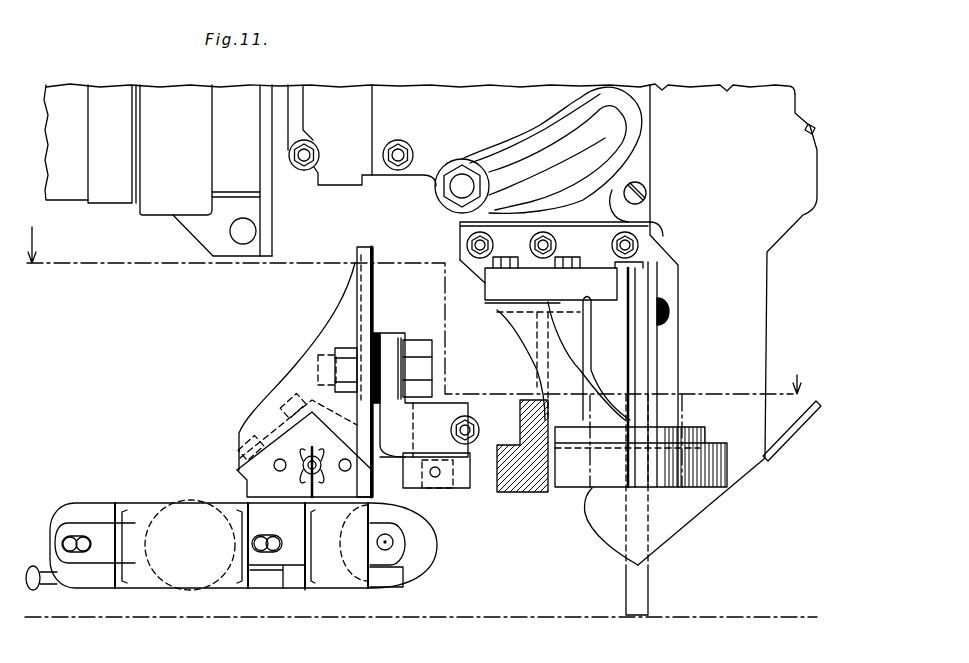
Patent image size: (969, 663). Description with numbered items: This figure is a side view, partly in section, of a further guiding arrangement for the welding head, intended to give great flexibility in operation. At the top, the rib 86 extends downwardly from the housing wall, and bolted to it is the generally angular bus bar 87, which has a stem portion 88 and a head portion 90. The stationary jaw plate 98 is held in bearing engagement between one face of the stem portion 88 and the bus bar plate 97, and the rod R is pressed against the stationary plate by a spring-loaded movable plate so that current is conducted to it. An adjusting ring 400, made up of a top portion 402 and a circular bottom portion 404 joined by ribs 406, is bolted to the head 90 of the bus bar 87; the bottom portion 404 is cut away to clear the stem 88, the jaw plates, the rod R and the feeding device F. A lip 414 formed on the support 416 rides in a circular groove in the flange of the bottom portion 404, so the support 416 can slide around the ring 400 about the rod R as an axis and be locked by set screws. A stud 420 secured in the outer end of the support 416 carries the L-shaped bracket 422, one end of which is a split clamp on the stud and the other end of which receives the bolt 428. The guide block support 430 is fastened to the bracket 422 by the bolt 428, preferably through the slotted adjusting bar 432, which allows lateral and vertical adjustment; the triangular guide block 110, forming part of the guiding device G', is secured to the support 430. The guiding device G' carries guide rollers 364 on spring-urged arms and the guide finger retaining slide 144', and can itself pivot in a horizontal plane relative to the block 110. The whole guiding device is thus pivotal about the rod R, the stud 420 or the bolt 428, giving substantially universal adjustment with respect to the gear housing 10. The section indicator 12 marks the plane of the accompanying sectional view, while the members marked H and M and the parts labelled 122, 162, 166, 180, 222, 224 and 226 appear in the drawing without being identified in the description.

The gear housing 10 is at (639, 99).
The section line 12- 12 is at (424, 422).
The rib 86 is at (465, 228).
The bus bar 87 is at (498, 286).
The stem portion 88 is at (605, 343).
The head portion 90 is at (603, 282).
The bus bar plate 97 is at (657, 365).
The stationary jaw plate 98 is at (620, 305).
The guide block 110 is at (297, 438).
The wing nut 122 is at (308, 483).
The guide finger retaining slide 144' is at (64, 588).
The stud 162 is at (808, 130).
The blade 166 is at (806, 423).
The bolt 180 is at (328, 174).
The slot 222 is at (595, 165).
The curved arm 224 is at (587, 133).
The pivot bolt 226 is at (456, 188).
The guide roller 364 is at (413, 561).
The adjusting ring 400 is at (685, 475).
The top portion 402 is at (497, 306).
The bottom portion 404 is at (564, 470).
The ribs 406 is at (553, 356).
The lip 414 is at (535, 490).
The support 416 is at (479, 480).
The stud 420 is at (441, 399).
The L-shaped bracket 422 is at (392, 480).
The bolt 428 is at (414, 345).
The guide block support 430 is at (330, 329).
The slotted adjusting bar 432 is at (377, 334).
The feeding device F is at (715, 97).
The guiding device G' is at (190, 531).
The head H is at (448, 96).
The motor M is at (70, 183).
The rod R is at (644, 591).